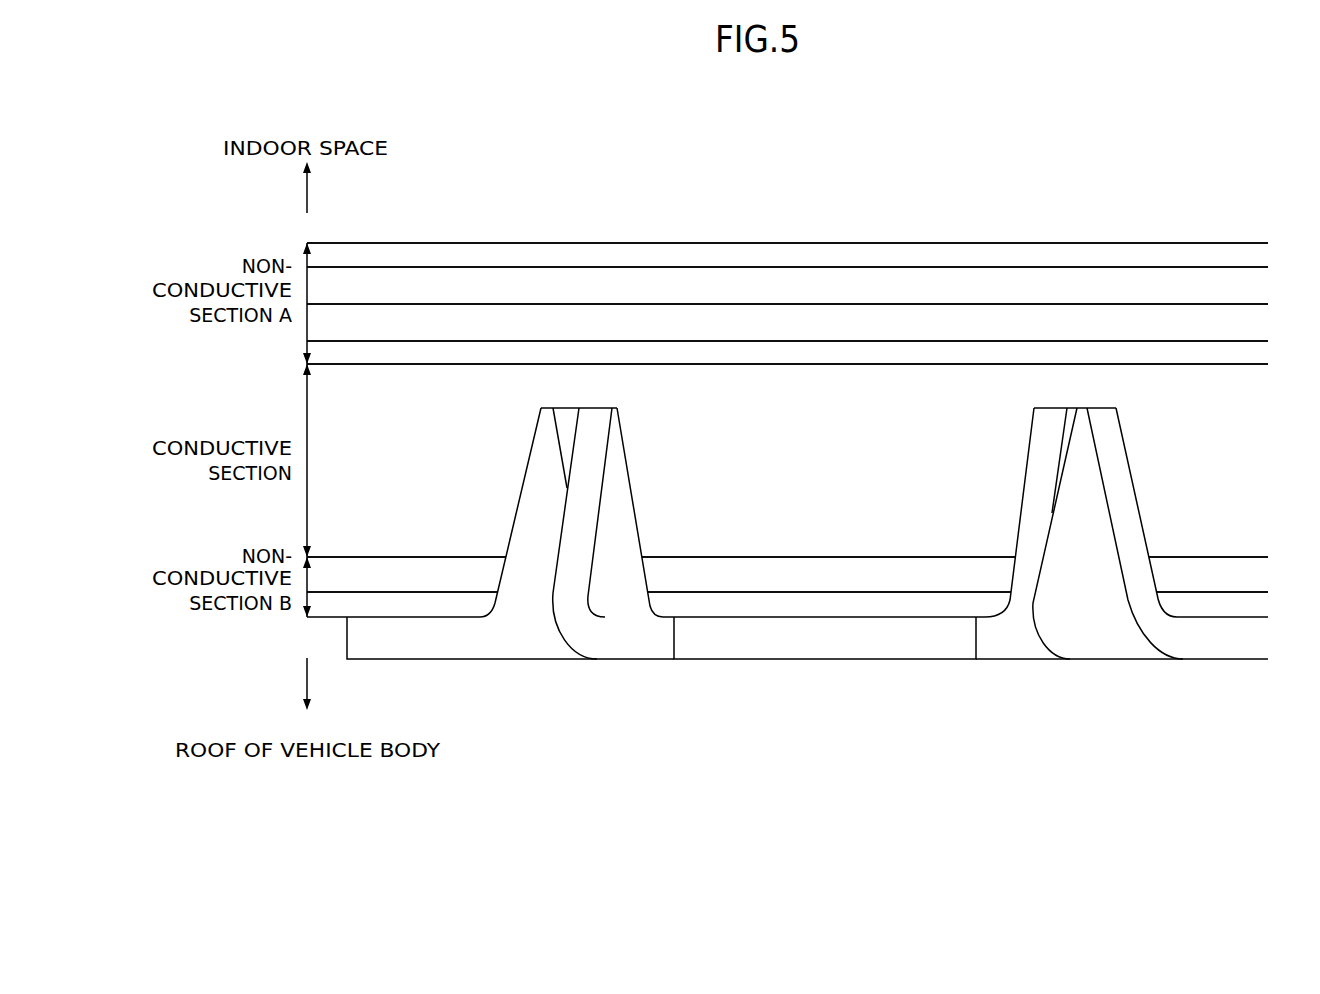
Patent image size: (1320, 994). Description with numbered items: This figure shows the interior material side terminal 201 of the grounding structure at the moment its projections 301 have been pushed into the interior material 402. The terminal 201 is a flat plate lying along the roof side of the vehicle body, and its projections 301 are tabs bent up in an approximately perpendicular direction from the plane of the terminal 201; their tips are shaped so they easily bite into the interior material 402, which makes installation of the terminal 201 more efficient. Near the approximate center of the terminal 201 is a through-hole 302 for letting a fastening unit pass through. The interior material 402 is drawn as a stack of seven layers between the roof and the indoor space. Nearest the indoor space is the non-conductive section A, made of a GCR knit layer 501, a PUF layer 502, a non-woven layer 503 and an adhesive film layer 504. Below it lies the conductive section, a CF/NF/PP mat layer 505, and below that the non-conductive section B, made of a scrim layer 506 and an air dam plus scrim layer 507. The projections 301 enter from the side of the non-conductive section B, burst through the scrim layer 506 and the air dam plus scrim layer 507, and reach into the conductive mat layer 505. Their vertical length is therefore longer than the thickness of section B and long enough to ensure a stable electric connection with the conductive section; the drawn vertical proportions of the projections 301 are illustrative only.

The interior material side terminal 201 is at (453, 628).
The through-hole 302 is at (674, 633).
The projections 301 is at (538, 461).
The interior material 402 is at (786, 230).
The GCR knit layer 501 is at (1250, 258).
The PUF layer 502 is at (1250, 290).
The non-woven layer 503 is at (1250, 323).
The adhesive film layer 504 is at (1250, 355).
The CF/NF/PP mat layer 505 is at (1250, 460).
The scrim layer 506 is at (1250, 576).
The air dam+scrim layer 507 is at (1250, 608).